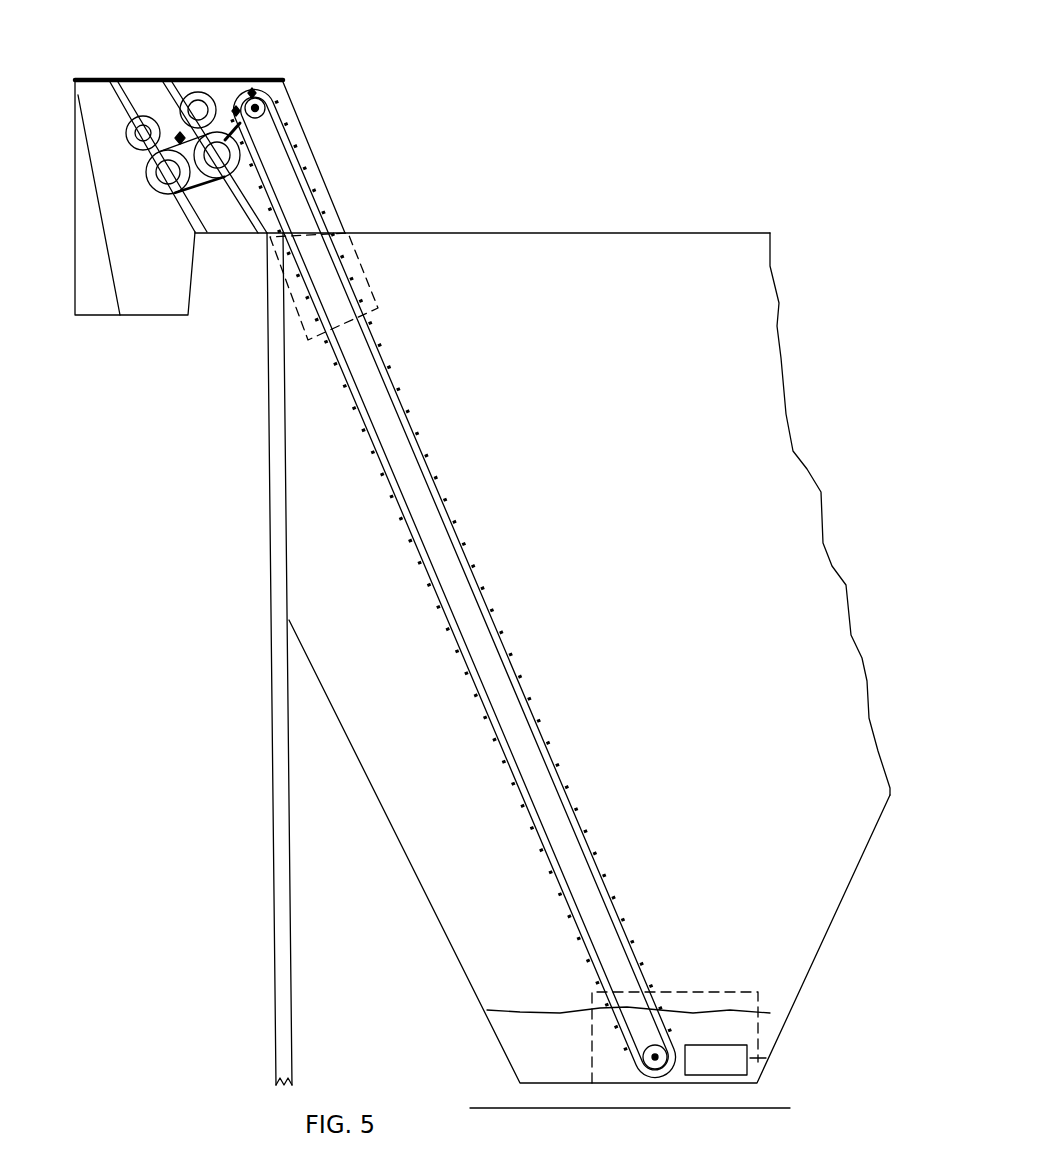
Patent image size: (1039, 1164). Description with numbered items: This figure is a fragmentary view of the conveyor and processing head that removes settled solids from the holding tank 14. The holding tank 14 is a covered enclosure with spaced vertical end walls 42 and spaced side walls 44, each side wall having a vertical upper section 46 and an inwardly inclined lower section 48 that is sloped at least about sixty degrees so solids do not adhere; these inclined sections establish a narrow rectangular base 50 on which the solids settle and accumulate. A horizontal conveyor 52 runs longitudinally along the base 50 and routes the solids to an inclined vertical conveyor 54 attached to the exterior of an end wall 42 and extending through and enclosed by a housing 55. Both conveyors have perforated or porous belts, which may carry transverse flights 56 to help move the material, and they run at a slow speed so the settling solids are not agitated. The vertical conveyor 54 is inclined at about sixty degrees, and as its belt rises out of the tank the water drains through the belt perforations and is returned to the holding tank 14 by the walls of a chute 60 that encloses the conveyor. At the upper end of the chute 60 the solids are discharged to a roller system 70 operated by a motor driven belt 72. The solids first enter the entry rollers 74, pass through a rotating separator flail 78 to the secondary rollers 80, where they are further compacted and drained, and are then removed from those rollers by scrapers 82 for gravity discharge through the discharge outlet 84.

The holding tank 14 is at (216, 659).
The vertical end wall 42 is at (542, 514).
The side wall 44 is at (285, 561).
The vertical upper section 46 is at (273, 508).
The inwardly inclined lower section 48 is at (405, 848).
The narrow rectangular base 50 is at (676, 1084).
The horizontal conveyor 52 is at (740, 1057).
The inclined vertical conveyor 54 is at (625, 933).
The housing 55 is at (365, 281).
The transverse flights 56 is at (587, 842).
The chute 60 is at (325, 186).
The roller system 70 is at (220, 98).
The motor driven belt 72 is at (258, 95).
The entry rollers 74 is at (188, 130).
The rotating separator flail 78 is at (176, 134).
The secondary rollers 80 is at (130, 126).
The scrapers 82 is at (158, 198).
The discharge outlet 84 is at (130, 295).